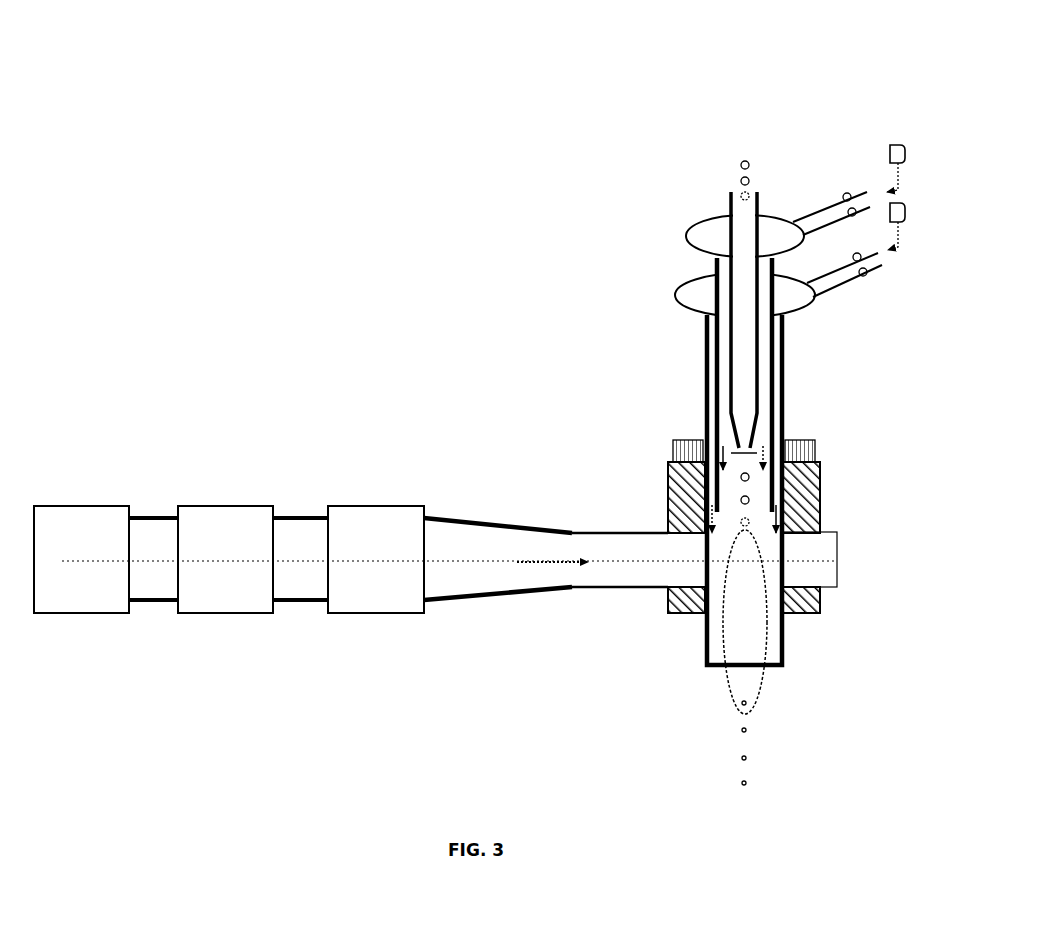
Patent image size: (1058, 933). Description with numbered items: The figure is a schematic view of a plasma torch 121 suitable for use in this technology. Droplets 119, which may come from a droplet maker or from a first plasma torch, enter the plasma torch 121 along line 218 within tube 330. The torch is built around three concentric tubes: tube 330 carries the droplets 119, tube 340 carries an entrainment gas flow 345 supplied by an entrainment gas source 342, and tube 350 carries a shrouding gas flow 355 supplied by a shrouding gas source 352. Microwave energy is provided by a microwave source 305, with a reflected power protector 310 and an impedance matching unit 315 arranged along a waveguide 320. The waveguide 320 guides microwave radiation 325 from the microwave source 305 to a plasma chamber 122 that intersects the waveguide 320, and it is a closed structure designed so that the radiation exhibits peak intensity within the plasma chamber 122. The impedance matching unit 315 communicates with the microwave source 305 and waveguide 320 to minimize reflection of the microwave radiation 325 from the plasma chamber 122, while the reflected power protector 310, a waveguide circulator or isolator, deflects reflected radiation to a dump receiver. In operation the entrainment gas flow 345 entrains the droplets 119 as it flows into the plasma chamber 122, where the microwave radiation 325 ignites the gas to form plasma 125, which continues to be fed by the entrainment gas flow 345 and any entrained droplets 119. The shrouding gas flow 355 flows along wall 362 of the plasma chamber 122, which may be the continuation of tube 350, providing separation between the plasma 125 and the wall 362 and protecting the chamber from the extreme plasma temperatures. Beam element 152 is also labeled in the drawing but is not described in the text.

The droplets 119 is at (737, 182).
The plasma torch 121 is at (550, 230).
The plasma chamber 122 is at (643, 432).
The plasma 125 is at (762, 688).
The ion beam 152 is at (770, 575).
The line 218 is at (733, 108).
The microwave source 305 is at (100, 503).
The reflected power protector 310 is at (234, 505).
The impedance matching unit 315 is at (373, 503).
The waveguide 320 is at (487, 520).
The microwave radiation 325 is at (541, 548).
The tube 330 is at (720, 255).
The tube 340 is at (715, 350).
The entrainment gas source 342 is at (878, 158).
The entrainment gas flow 345 is at (717, 440).
The tube 350 is at (713, 377).
The shrouding gas source 352 is at (880, 245).
The shrouding gas flow 355 is at (670, 480).
The wall 362 is at (783, 548).